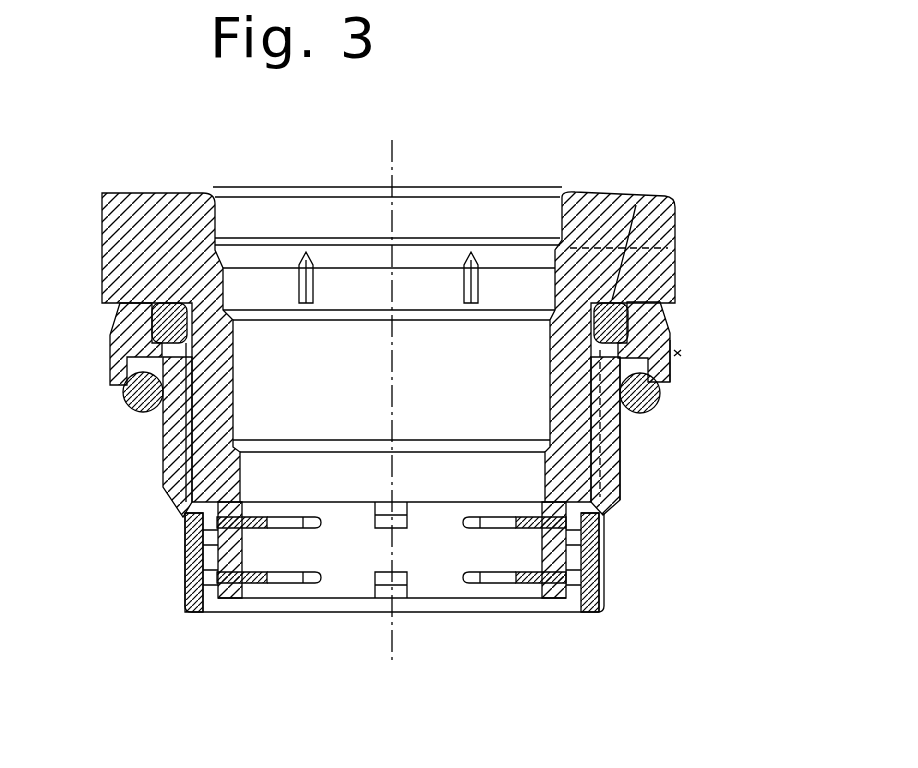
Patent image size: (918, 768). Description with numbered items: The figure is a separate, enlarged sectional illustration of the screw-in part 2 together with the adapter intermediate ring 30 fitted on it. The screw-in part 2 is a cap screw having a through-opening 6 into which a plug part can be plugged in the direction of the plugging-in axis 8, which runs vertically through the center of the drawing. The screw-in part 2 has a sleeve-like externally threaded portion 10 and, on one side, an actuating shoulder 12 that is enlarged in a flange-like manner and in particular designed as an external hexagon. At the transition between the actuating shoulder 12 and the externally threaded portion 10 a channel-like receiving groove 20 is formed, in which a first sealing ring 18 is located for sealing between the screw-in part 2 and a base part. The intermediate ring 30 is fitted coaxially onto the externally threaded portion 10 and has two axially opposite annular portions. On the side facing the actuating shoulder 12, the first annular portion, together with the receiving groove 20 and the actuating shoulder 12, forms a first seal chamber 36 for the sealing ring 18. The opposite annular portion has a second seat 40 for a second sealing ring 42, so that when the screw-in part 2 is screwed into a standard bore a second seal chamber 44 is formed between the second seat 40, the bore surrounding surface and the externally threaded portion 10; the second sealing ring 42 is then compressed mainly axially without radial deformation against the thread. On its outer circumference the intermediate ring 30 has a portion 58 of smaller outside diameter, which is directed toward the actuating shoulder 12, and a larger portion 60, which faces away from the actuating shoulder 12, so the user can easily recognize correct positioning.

The screw-in part 2 is at (610, 188).
The through-opening 6 is at (272, 347).
The plugging-in axis 8 is at (396, 148).
The externally threaded portion 10 is at (612, 437).
The actuating shoulder 12 is at (668, 248).
The sealing ring 18 is at (133, 192).
The receiving groove 20 is at (172, 307).
The intermediate ring 30 is at (672, 337).
The first seal chamber 36 is at (623, 282).
The second seat 40 is at (168, 362).
The second sealing ring 42 is at (658, 407).
The second seal chamber 44 is at (671, 373).
The portion of smaller outside diameter 58 is at (662, 313).
The larger portion 60 is at (677, 350).